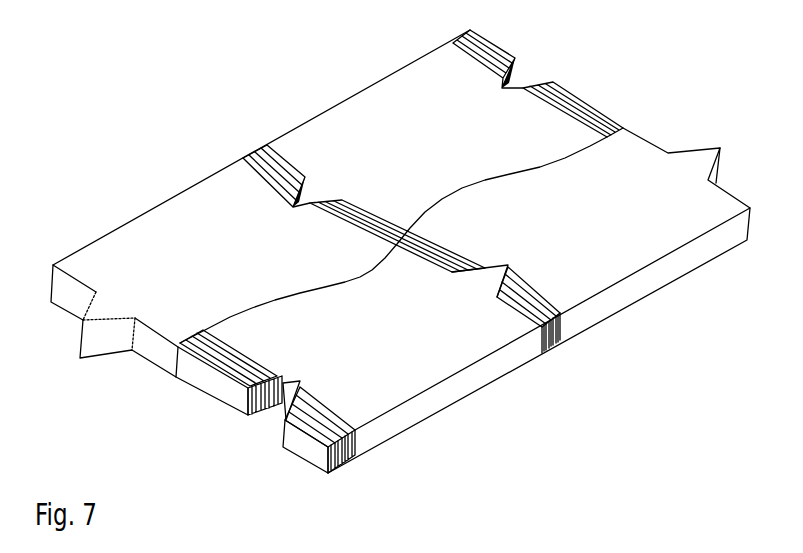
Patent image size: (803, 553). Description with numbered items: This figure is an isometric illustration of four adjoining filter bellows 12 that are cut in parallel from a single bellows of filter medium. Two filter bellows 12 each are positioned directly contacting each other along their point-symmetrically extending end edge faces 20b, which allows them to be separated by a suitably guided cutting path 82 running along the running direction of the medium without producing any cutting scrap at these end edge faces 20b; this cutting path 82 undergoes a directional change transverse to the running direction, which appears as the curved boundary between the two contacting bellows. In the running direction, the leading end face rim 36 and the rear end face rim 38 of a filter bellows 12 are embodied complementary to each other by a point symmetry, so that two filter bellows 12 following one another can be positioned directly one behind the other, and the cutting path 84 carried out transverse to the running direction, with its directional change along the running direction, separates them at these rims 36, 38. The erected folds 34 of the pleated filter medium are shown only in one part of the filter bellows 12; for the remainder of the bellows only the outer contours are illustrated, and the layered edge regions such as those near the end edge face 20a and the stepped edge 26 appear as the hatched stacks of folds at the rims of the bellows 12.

The filter bellows 12 is at (177, 221).
The first panel 20a is at (138, 214).
The end edge face 20b is at (293, 287).
The stepped edge 26 is at (258, 160).
The erected folds 34 is at (377, 220).
The leading end face rim 36 is at (272, 163).
The rear end face rim 38 is at (450, 273).
The cutting path 82 is at (238, 315).
The cutting path 84 is at (512, 317).